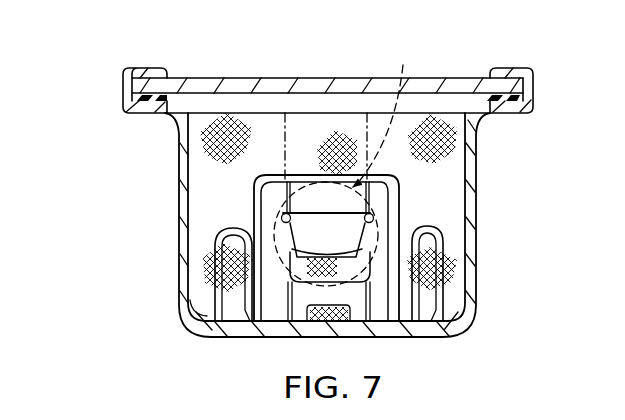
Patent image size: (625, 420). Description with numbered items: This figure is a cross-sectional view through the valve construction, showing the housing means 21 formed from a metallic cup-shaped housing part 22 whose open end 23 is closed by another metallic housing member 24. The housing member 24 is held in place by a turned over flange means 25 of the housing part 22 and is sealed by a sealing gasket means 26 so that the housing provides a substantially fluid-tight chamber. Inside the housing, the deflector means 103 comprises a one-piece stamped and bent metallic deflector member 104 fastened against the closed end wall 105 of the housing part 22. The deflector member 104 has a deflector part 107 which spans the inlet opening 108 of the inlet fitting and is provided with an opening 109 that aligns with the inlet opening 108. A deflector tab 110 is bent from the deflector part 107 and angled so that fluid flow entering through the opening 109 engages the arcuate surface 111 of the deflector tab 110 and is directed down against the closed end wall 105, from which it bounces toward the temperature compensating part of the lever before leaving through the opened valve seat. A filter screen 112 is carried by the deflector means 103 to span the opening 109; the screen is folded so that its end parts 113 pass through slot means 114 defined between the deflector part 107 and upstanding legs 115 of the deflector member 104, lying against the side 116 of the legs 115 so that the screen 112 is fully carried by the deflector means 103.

The housing means 21 is at (479, 287).
The cup-shaped housing part 22 is at (178, 266).
The open end 23 is at (172, 105).
The housing member 24 is at (358, 78).
The turned over flange means 25 is at (152, 66).
The sealing gasket means 26 is at (137, 98).
The deflector means 103 is at (472, 191).
The deflector member 104 is at (250, 203).
The closed end wall 105 is at (206, 312).
The deflector part 107 is at (297, 175).
The inlet opening 108 is at (403, 66).
The opening 109 is at (357, 270).
The deflector tab 110 is at (338, 233).
The arcuate surface 111 is at (313, 259).
The filter screen 112 is at (232, 107).
The end parts 113 is at (205, 172).
The slot means 114 is at (243, 283).
The upstanding legs 115 is at (213, 230).
The side 116 is at (214, 248).